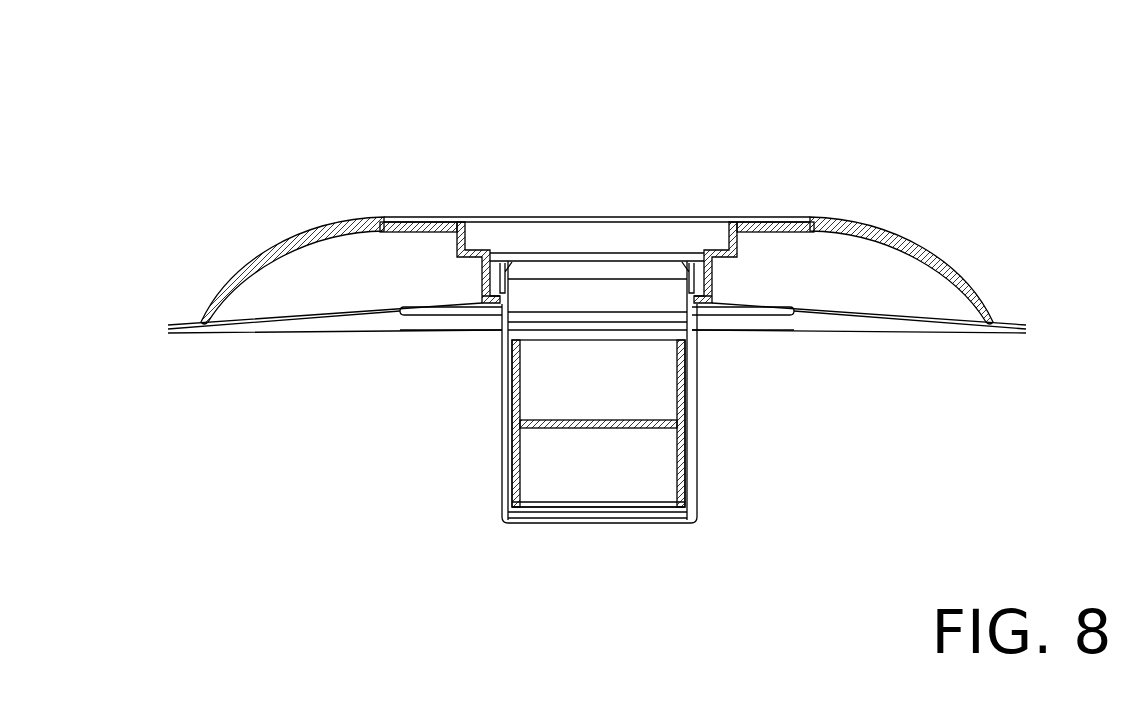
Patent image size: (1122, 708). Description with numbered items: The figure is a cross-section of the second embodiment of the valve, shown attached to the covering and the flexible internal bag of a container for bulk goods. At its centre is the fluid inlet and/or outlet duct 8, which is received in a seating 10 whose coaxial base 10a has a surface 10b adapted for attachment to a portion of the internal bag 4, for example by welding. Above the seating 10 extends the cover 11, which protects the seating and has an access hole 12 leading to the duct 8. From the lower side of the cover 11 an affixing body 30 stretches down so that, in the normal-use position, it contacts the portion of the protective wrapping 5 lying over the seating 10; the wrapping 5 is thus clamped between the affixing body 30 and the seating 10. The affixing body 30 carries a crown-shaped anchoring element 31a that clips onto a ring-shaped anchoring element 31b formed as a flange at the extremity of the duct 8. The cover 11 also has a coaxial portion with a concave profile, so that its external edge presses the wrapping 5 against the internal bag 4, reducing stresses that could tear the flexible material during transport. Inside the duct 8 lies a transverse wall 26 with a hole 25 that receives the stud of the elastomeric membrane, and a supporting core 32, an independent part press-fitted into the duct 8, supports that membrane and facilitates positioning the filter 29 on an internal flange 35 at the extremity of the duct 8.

The internal bag 4 is at (180, 330).
The protective wrapping 5 is at (180, 330).
The fluid inlet and/or outlet duct 8 is at (555, 276).
The seating 10 is at (403, 322).
The coaxial base 10a is at (470, 310).
The surface 10b is at (432, 313).
The cover 11 is at (917, 250).
The access hole 12 is at (610, 212).
The hole 25 is at (528, 432).
The transverse wall 26 is at (593, 425).
The filter 29 is at (697, 523).
The affixing body 30 is at (483, 284).
The anchoring element 31a is at (483, 297).
The anchoring element 31b is at (505, 285).
The supporting core 32 is at (682, 462).
The internal flange 35 is at (677, 523).